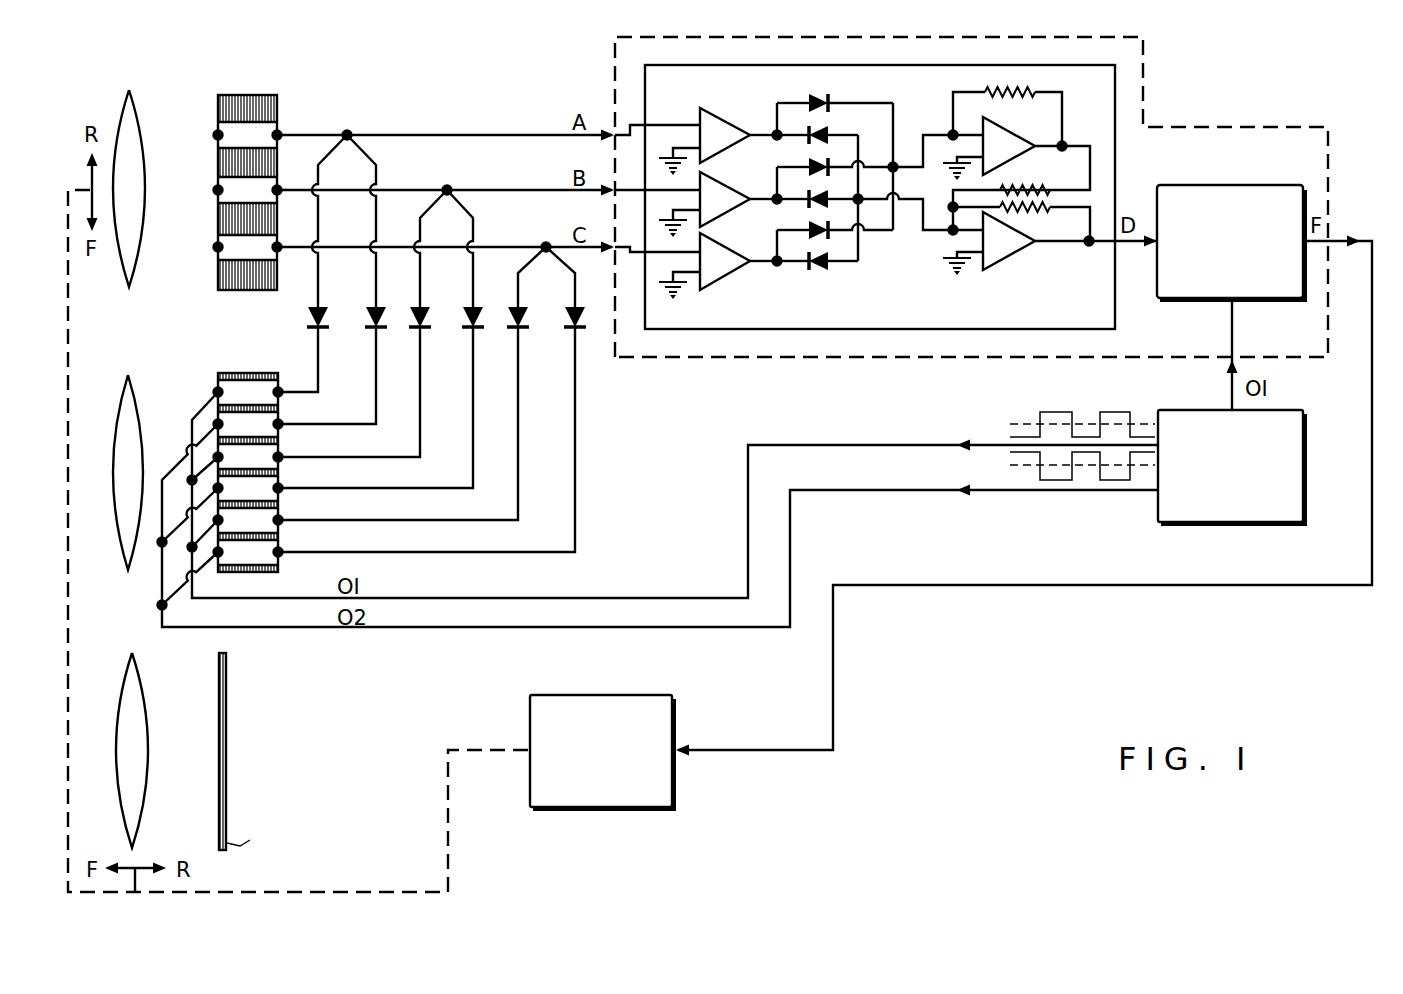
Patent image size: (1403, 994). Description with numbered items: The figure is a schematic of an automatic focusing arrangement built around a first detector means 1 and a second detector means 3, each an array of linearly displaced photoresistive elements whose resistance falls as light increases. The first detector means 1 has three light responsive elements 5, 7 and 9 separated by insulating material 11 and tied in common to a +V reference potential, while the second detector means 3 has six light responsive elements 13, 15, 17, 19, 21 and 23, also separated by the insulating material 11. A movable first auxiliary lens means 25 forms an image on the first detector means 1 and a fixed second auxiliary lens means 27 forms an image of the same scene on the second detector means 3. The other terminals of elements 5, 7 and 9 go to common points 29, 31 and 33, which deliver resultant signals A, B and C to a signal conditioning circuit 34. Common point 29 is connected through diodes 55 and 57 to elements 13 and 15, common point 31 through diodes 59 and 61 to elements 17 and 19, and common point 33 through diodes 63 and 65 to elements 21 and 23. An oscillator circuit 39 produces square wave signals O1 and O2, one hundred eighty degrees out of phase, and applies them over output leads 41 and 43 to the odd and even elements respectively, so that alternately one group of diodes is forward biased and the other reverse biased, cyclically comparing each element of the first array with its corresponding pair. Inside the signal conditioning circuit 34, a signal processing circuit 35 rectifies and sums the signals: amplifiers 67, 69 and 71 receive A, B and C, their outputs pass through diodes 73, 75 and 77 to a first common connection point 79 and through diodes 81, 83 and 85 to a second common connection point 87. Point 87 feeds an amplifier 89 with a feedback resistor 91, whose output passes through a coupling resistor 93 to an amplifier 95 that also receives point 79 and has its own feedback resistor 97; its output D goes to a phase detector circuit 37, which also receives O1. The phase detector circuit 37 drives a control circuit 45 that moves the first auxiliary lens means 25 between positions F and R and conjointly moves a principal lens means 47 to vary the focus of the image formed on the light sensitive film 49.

The first detector means 1 is at (236, 307).
The second detector means 3 is at (251, 455).
The light responsive element 5 is at (248, 136).
The light responsive element 7 is at (248, 191).
The light responsive element 9 is at (248, 248).
The insulating material 11 is at (218, 93).
The light responsive element 13 is at (248, 393).
The light responsive element 15 is at (248, 425).
The light responsive element 17 is at (248, 458).
The light responsive element 19 is at (248, 489).
The light responsive element 21 is at (248, 521).
The light responsive element 23 is at (248, 553).
The first auxiliary lens means 25 is at (131, 284).
The second auxiliary lens means 27 is at (130, 380).
The common point 29 is at (349, 131).
The common point 31 is at (449, 186).
The common point 33 is at (543, 243).
The signal conditioning circuit 34 is at (1146, 64).
The signal processing circuit 35 is at (993, 65).
The phase detector circuit 37 is at (1233, 185).
The oscillator circuit 39 is at (1305, 518).
The output lead 41 is at (843, 445).
The output lead 43 is at (848, 490).
The control circuit 45 is at (648, 695).
The principal lens means 47 is at (140, 680).
The light sensitive film 49 is at (227, 680).
The diode 55 is at (321, 330).
The diode 57 is at (379, 330).
The diode 59 is at (423, 330).
The diode 61 is at (476, 330).
The diode 63 is at (521, 330).
The diode 65 is at (578, 330).
The first amplifier 67 is at (718, 141).
The second amplifier 69 is at (718, 204).
The third amplifier 71 is at (718, 266).
The diode 73 is at (830, 128).
The diode 75 is at (830, 192).
The diode 77 is at (830, 268).
The first common connection point 79 is at (860, 203).
The diode 81 is at (830, 98).
The diode 83 is at (806, 164).
The diode 85 is at (806, 227).
The second common connection point 87 is at (896, 170).
The amplifier 89 is at (1016, 153).
The feedback resistor 91 is at (1035, 92).
The coupling resistor 93 is at (1032, 186).
The amplifier 95 is at (1049, 243).
The feedback resistor 97 is at (1030, 211).